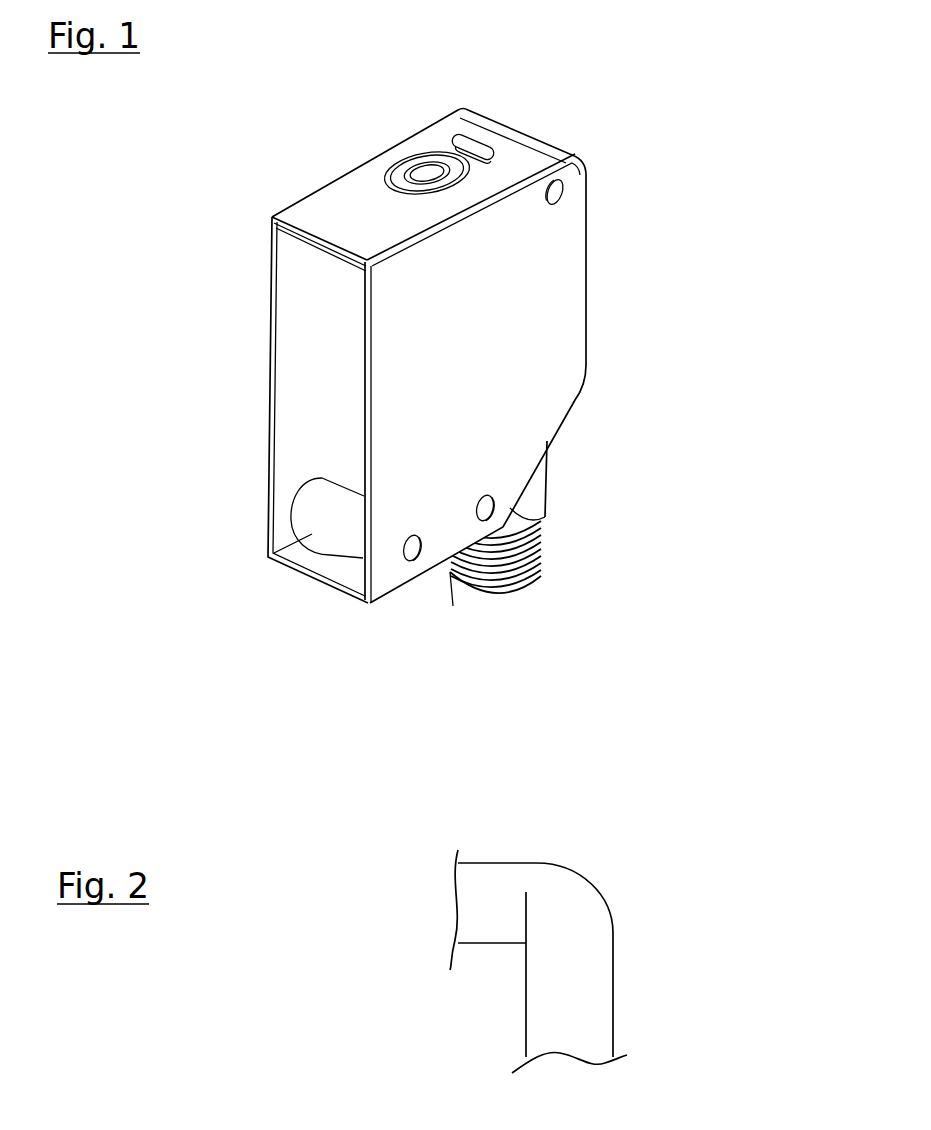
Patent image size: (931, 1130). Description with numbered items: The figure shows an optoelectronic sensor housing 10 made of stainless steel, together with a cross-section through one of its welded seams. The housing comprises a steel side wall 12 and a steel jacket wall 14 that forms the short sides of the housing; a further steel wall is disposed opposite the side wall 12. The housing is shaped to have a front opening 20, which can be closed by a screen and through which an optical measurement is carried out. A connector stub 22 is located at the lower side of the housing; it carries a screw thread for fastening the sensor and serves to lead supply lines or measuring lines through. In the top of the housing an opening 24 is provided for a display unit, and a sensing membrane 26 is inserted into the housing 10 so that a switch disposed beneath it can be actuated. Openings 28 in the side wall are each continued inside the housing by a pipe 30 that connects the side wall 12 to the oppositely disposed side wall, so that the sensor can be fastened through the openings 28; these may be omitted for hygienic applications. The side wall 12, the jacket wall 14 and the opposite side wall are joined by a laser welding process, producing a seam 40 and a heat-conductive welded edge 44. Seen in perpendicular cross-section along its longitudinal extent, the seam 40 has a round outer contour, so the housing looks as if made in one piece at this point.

In FIG. 1, the sensor housing 10 is at (645, 168).
In FIG. 1, the side wall 12 is at (558, 353).
In FIG. 2, the side wall 12 is at (597, 1030).
In FIG. 1, the jacket wall 14 is at (333, 210).
In FIG. 2, the jacket wall 14 is at (478, 877).
In FIG. 1, the front opening 20 is at (284, 457).
In FIG. 1, the connector stub 22 is at (533, 479).
In FIG. 1, the opening for display unit 24 is at (477, 147).
In FIG. 1, the sensing membrane 26 is at (428, 160).
In FIG. 1, the openings 28 is at (413, 562).
In FIG. 1, the pipe 30 is at (315, 530).
In FIG. 1, the seam 40 is at (447, 223).
In FIG. 2, the seam 40 is at (613, 932).
In FIG. 1, the heat-conductive welded edge 44 is at (357, 163).